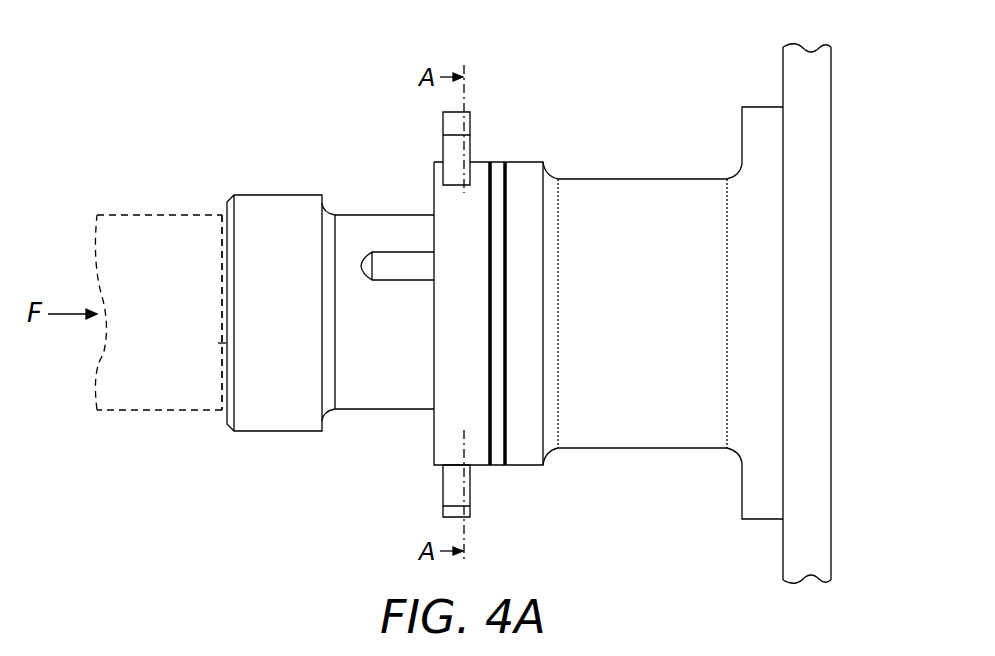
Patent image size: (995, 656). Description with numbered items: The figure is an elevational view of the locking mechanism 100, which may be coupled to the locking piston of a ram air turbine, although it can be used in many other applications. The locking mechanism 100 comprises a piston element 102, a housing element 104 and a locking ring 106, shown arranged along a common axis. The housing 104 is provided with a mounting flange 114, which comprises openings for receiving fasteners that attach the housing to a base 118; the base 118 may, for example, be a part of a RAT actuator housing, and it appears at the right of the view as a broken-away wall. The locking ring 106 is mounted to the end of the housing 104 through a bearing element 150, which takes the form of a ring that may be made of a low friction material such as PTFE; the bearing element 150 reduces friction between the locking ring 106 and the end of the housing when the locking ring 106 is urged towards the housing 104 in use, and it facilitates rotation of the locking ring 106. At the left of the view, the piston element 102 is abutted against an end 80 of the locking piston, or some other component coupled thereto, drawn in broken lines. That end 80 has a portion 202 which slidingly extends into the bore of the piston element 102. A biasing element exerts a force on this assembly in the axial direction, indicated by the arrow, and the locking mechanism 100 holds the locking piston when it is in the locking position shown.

The locking mechanism 100 is at (682, 66).
The end of the locking piston 80 is at (153, 414).
The portion 202 is at (218, 293).
The piston element 102 is at (282, 422).
The locking ring 106 is at (479, 455).
The bearing element 150 is at (496, 182).
The housing element 104 is at (637, 192).
The mounting flange 114 is at (760, 510).
The base 118 is at (822, 470).